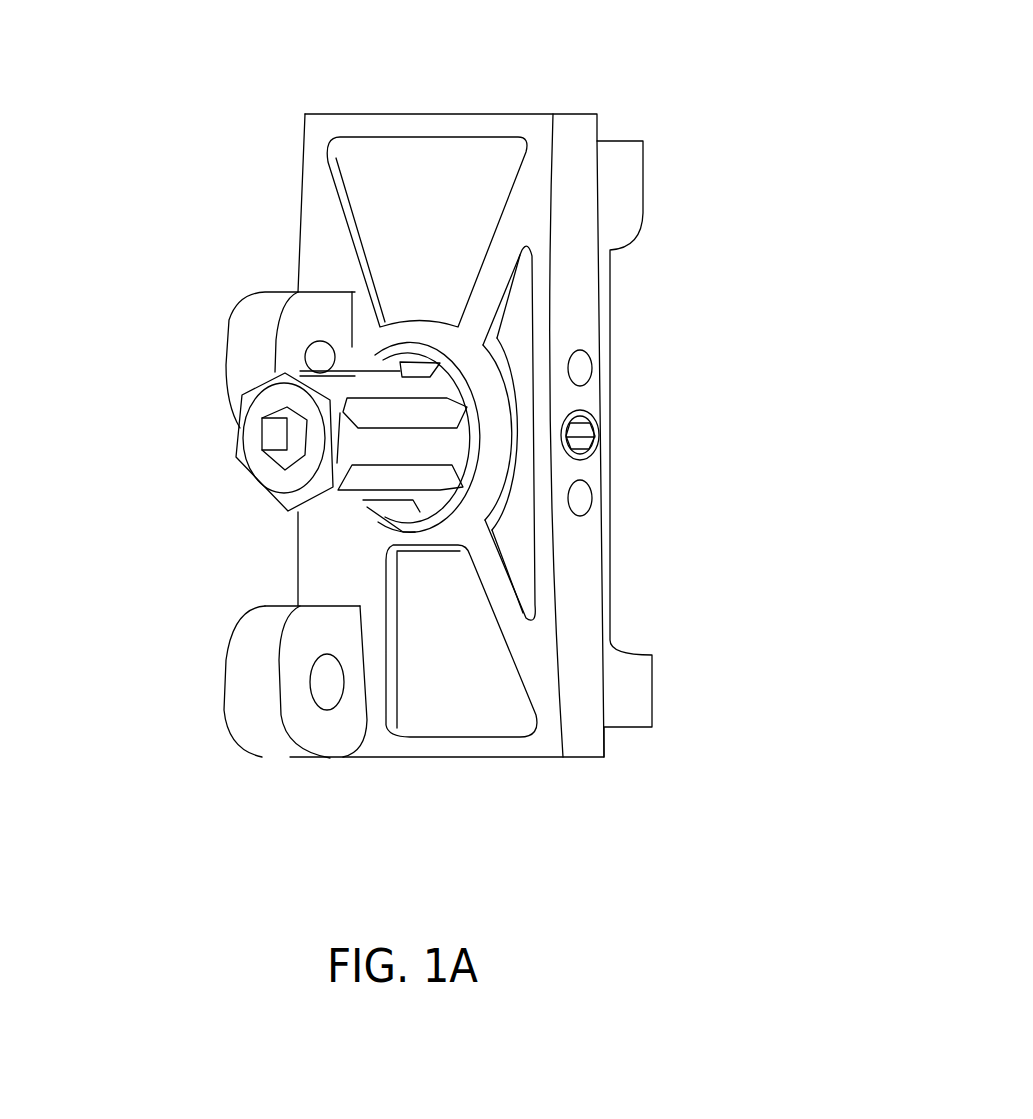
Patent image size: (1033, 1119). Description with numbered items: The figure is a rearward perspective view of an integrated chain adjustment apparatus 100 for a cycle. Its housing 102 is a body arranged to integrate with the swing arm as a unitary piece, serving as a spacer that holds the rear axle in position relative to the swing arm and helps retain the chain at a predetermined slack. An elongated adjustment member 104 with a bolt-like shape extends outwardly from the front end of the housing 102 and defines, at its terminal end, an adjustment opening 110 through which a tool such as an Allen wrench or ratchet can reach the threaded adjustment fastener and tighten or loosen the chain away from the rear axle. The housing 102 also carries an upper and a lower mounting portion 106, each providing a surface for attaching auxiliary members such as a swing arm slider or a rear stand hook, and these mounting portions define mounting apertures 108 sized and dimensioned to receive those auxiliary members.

The integrated chain adjustment apparatus 100 is at (208, 77).
The housing 102 is at (310, 234).
The elongated adjustment member 104 is at (347, 390).
The mounting portion 106 is at (282, 312).
The mounting apertures 108 is at (332, 677).
The adjustment opening 110 is at (282, 460).